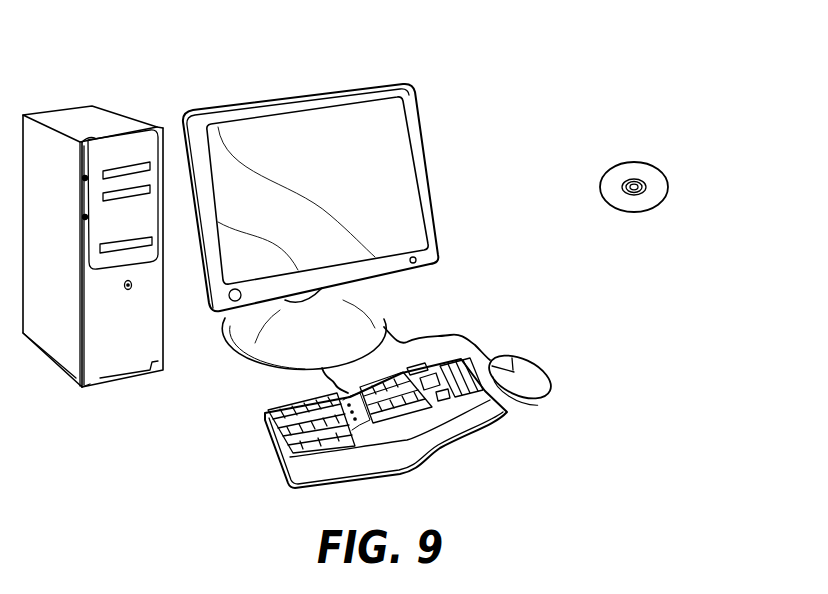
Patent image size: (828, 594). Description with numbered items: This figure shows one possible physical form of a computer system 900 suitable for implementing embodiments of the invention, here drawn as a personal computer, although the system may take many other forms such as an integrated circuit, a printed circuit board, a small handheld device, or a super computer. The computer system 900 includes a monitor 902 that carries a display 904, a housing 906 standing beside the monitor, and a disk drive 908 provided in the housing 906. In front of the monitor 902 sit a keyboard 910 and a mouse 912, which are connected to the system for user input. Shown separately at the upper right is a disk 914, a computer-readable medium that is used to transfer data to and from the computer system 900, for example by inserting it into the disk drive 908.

The computer system 900 is at (556, 68).
The monitor 902 is at (430, 195).
The display 904 is at (382, 128).
The housing 906 is at (77, 118).
The disk drive 908 is at (140, 243).
The keyboard 910 is at (278, 455).
The mouse 912 is at (542, 368).
The disk 914 is at (652, 162).